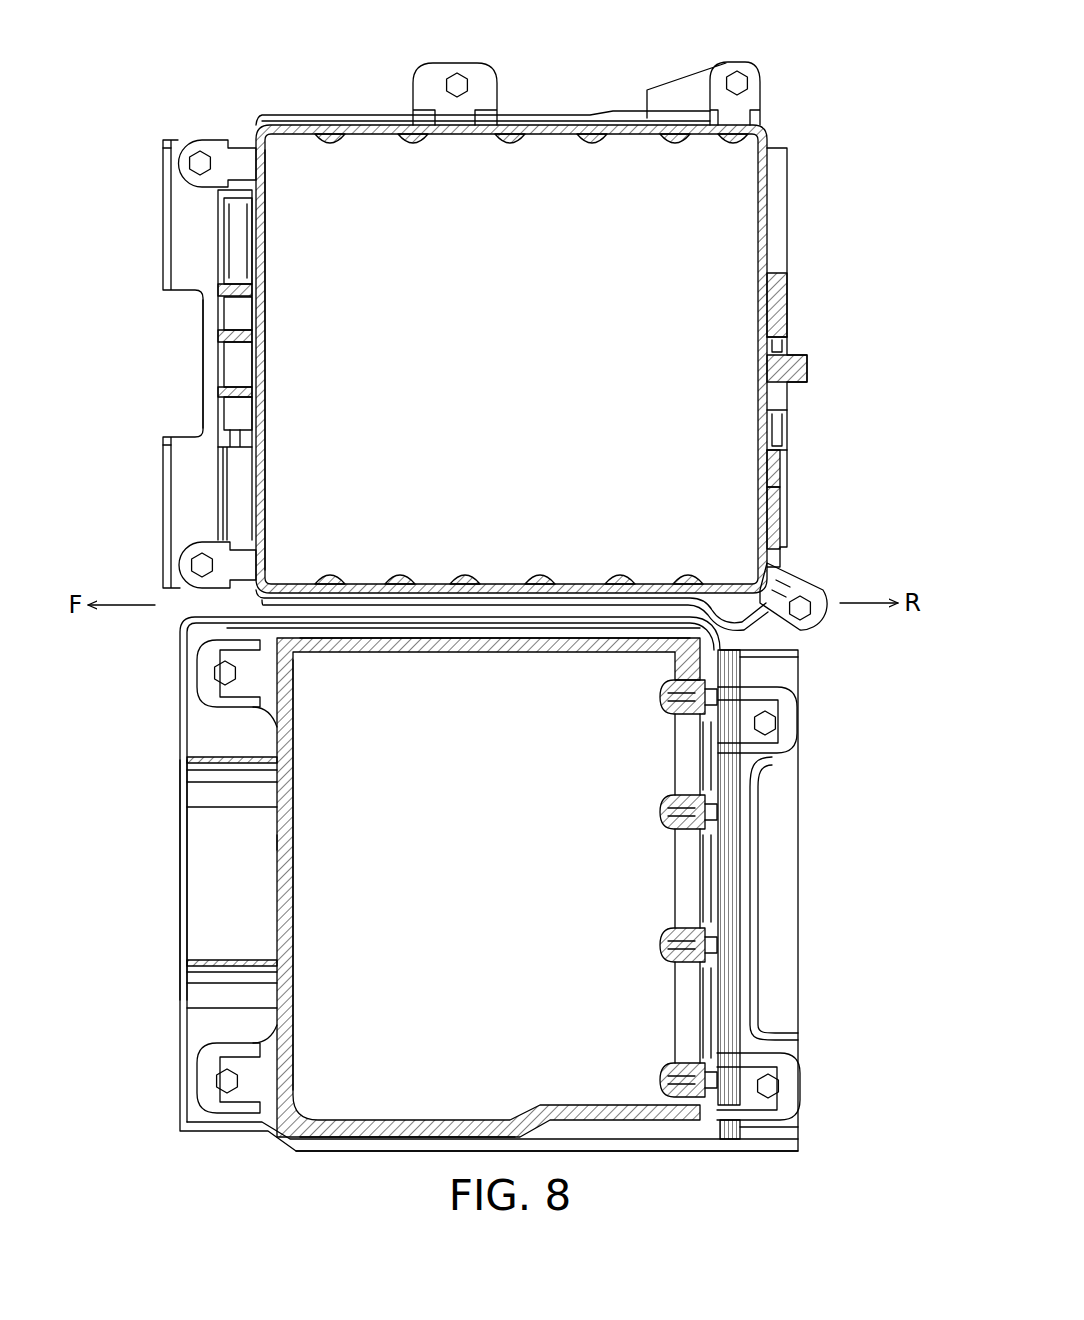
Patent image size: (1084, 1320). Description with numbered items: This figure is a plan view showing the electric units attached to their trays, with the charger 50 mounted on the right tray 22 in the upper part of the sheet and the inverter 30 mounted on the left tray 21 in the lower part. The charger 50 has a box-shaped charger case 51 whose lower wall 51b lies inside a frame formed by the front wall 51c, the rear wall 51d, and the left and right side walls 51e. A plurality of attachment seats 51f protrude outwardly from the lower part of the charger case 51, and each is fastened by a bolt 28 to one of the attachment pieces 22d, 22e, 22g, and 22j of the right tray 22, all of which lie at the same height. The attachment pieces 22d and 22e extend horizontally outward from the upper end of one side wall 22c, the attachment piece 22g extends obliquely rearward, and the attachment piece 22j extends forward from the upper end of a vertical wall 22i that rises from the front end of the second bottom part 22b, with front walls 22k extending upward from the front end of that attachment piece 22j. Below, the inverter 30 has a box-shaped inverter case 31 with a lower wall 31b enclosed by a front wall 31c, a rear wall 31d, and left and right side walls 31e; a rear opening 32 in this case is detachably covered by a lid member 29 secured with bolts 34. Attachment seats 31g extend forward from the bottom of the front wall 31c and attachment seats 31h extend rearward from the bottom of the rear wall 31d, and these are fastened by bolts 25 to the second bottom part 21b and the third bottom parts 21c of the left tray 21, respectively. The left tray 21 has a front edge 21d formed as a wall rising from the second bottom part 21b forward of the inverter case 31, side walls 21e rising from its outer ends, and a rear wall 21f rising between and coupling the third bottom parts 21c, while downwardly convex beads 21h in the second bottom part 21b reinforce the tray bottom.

The left tray 21 is at (176, 892).
The second bottom part 21b is at (200, 938).
The third bottom parts 21c is at (790, 673).
The front edge 21d is at (180, 832).
The side walls 21e is at (448, 640).
The rear wall 21f is at (758, 875).
The beads 21h is at (200, 782).
The right tray 22 is at (160, 234).
The second bottom part 22b is at (242, 210).
The side walls 22c is at (540, 118).
The attachment piece 22d is at (418, 84).
The attachment piece 22e is at (680, 90).
The attachment piece 22g is at (792, 578).
The vertical wall 22i is at (232, 250).
The attachment piece 22j is at (190, 268).
The front walls 22k is at (164, 188).
The bolts 25 is at (212, 672).
The bolts 28 is at (194, 150).
The lid member 29 is at (730, 855).
The inverter 30 is at (276, 842).
The inverter case 31 is at (280, 887).
The lower wall 31b is at (447, 874).
The front wall 31c is at (295, 905).
The rear wall 31d is at (672, 890).
The side walls 31e is at (333, 652).
The attachment seats 31g is at (205, 695).
The attachment seats 31h is at (782, 712).
The rear opening 32 is at (690, 992).
The bolts 34 is at (712, 812).
The charger 50 is at (247, 478).
The charger case 51 is at (255, 500).
The lower wall 51b is at (460, 372).
The front wall 51c is at (262, 350).
The rear wall 51d is at (765, 292).
The side walls 51e is at (558, 138).
The attachment seats 51f is at (228, 140).